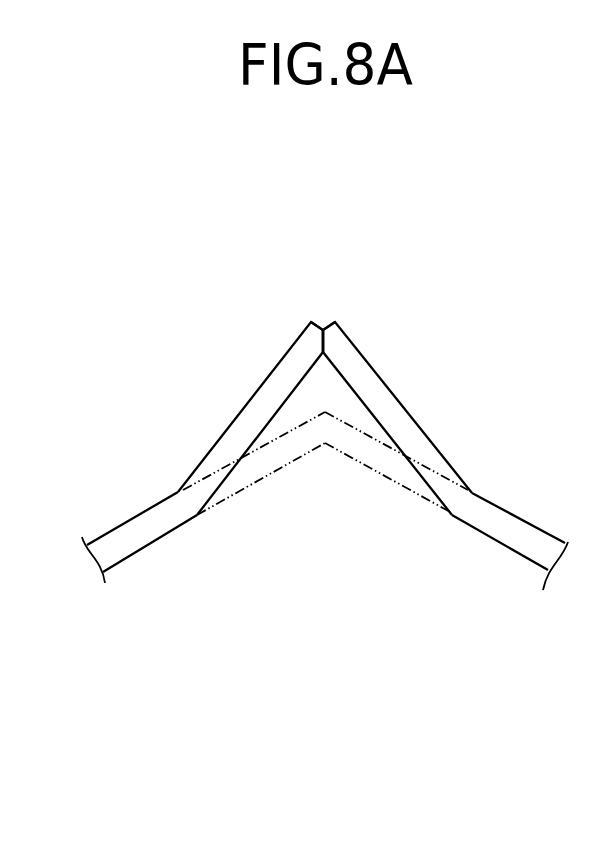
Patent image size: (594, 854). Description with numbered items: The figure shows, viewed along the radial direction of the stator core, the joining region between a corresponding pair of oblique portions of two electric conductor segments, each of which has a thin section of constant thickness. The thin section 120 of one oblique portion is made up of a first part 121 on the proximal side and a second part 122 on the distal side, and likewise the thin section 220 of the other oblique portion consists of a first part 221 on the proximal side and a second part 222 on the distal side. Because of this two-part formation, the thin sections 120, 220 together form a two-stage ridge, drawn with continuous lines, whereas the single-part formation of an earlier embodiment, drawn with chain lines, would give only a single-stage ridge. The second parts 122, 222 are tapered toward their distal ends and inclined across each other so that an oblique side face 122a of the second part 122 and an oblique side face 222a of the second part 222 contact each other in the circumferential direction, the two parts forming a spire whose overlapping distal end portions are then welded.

The thin section 120 is at (252, 424).
The first part 121 is at (158, 517).
The second part 122 is at (247, 413).
The oblique side face 122a is at (325, 337).
The thin section 220 is at (406, 432).
The first part 221 is at (500, 523).
The second part 222 is at (405, 415).
The oblique side face 222a is at (323, 347).